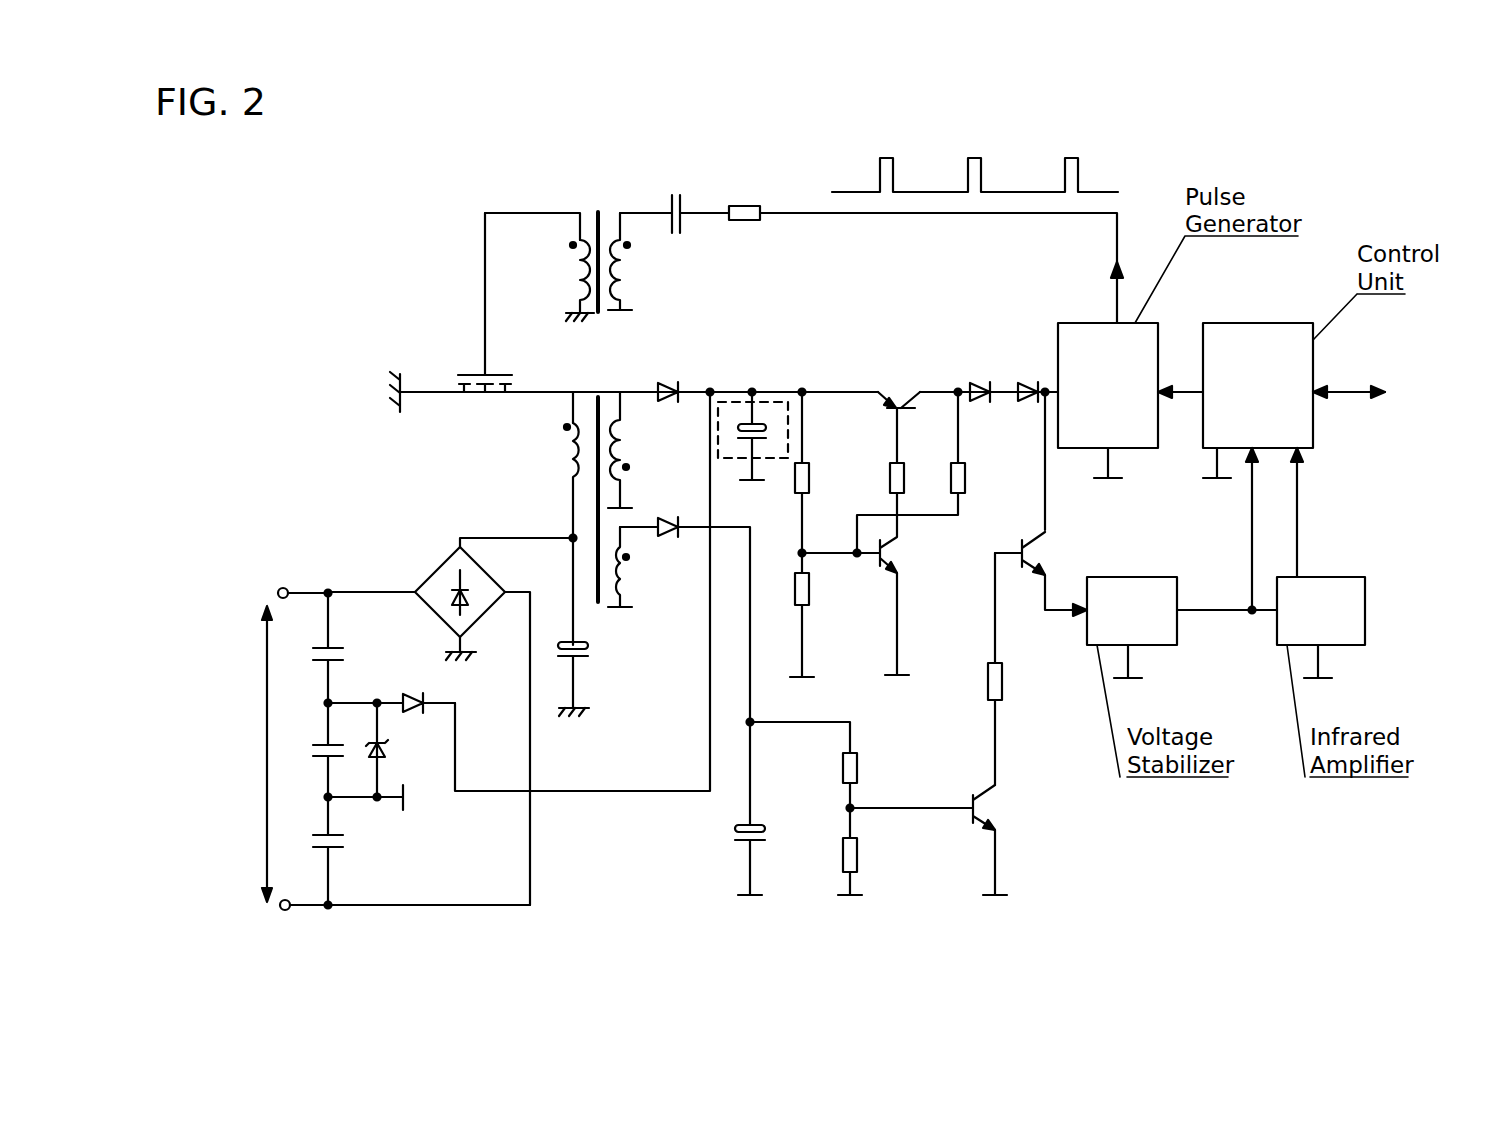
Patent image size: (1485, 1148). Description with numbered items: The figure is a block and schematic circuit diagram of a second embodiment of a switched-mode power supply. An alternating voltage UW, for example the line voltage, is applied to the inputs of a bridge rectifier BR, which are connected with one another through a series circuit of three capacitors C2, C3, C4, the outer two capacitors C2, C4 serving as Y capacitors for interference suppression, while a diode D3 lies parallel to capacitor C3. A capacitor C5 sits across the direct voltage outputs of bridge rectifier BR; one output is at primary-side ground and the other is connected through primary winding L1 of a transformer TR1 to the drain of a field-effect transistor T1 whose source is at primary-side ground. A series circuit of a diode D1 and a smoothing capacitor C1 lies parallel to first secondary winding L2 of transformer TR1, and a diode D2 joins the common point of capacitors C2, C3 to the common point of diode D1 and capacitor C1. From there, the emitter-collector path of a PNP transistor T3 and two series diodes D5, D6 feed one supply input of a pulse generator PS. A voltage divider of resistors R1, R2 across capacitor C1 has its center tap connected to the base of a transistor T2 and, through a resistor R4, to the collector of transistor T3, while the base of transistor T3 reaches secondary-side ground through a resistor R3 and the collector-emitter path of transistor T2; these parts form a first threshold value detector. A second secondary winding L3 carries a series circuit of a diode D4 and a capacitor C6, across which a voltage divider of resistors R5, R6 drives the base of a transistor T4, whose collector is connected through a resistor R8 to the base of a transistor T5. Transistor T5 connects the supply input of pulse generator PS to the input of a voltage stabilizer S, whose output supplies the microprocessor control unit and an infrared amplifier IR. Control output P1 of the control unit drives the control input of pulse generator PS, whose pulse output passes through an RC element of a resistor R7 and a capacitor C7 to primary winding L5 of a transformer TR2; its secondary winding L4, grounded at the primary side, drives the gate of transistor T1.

The field-effect transistor T1 is at (485, 323).
The transformer TR1 is at (596, 496).
The transformer TR2 is at (575, 241).
The primary winding L1 is at (553, 534).
The first secondary winding L2 is at (637, 450).
The second secondary winding L3 is at (637, 567).
The secondary winding L4 is at (566, 280).
The primary winding L5 is at (637, 261).
The capacitor C1 is at (753, 413).
The capacitor C2 is at (322, 648).
The capacitor C3 is at (310, 750).
The capacitor C4 is at (322, 851).
The capacitor C5 is at (563, 679).
The capacitor C6 is at (765, 860).
The capacitor C7 is at (674, 197).
The diode D1 is at (665, 375).
The diode D2 is at (391, 689).
The diode D3 is at (377, 755).
The diode D4 is at (685, 654).
The diode D5 is at (977, 374).
The diode D6 is at (1031, 374).
The resistor R1 is at (821, 472).
The resistor R2 is at (818, 615).
The resistor R3 is at (915, 451).
The resistor R4 is at (976, 443).
The resistor R5 is at (823, 765).
The resistor R6 is at (867, 851).
The resistor R7 is at (926, 242).
The resistor R8 is at (1016, 669).
The transistor T2 is at (880, 584).
The transistor T3 is at (899, 378).
The transistor T4 is at (941, 840).
The transistor T5 is at (1041, 504).
The bridge rectifier BR is at (452, 720).
The alternating voltage UW is at (232, 754).
The pulse generator PS is at (1108, 400).
The control output P1 is at (1180, 371).
The voltage stabilizer S is at (1182, 627).
The infrared amplifier IR is at (1321, 627).